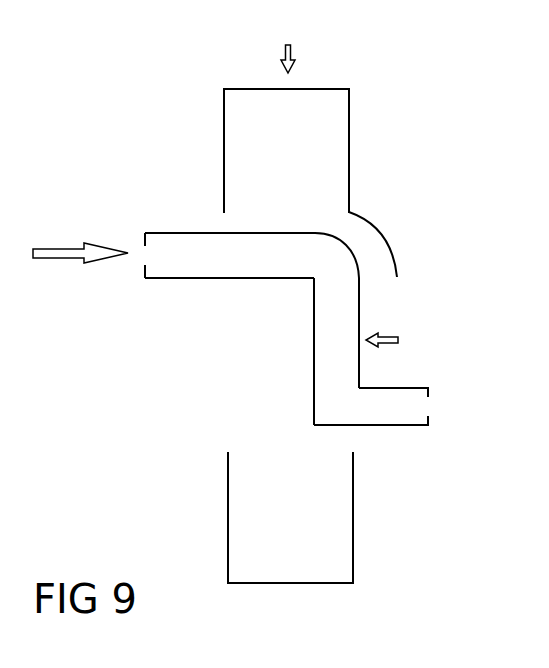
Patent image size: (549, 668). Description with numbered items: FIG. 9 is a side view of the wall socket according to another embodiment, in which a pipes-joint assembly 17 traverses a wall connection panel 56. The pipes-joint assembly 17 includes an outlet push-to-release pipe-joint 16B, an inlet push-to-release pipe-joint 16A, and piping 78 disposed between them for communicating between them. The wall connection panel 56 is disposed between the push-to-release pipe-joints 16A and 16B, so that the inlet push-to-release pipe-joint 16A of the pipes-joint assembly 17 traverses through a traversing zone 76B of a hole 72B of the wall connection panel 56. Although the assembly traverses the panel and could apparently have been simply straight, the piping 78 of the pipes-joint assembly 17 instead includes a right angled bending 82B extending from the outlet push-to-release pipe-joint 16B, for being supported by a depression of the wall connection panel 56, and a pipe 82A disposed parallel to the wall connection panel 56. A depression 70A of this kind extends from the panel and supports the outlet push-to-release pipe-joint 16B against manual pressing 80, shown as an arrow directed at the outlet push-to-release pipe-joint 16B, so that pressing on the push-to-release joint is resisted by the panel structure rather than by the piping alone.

The wall connection panel 56 is at (284, 42).
The depression 70A is at (390, 227).
The hole 72B is at (257, 386).
The right angled bending 82B is at (343, 253).
The pipe 82A is at (345, 325).
The inlet push-to-release pipe-joint 16A is at (437, 403).
The traversing zone 76B is at (292, 424).
The piping 78 is at (338, 346).
The outlet push-to-release pipe-joint 16B is at (138, 242).
The manual pressing 80 is at (72, 245).
The pipes-joint assembly 17 is at (398, 343).